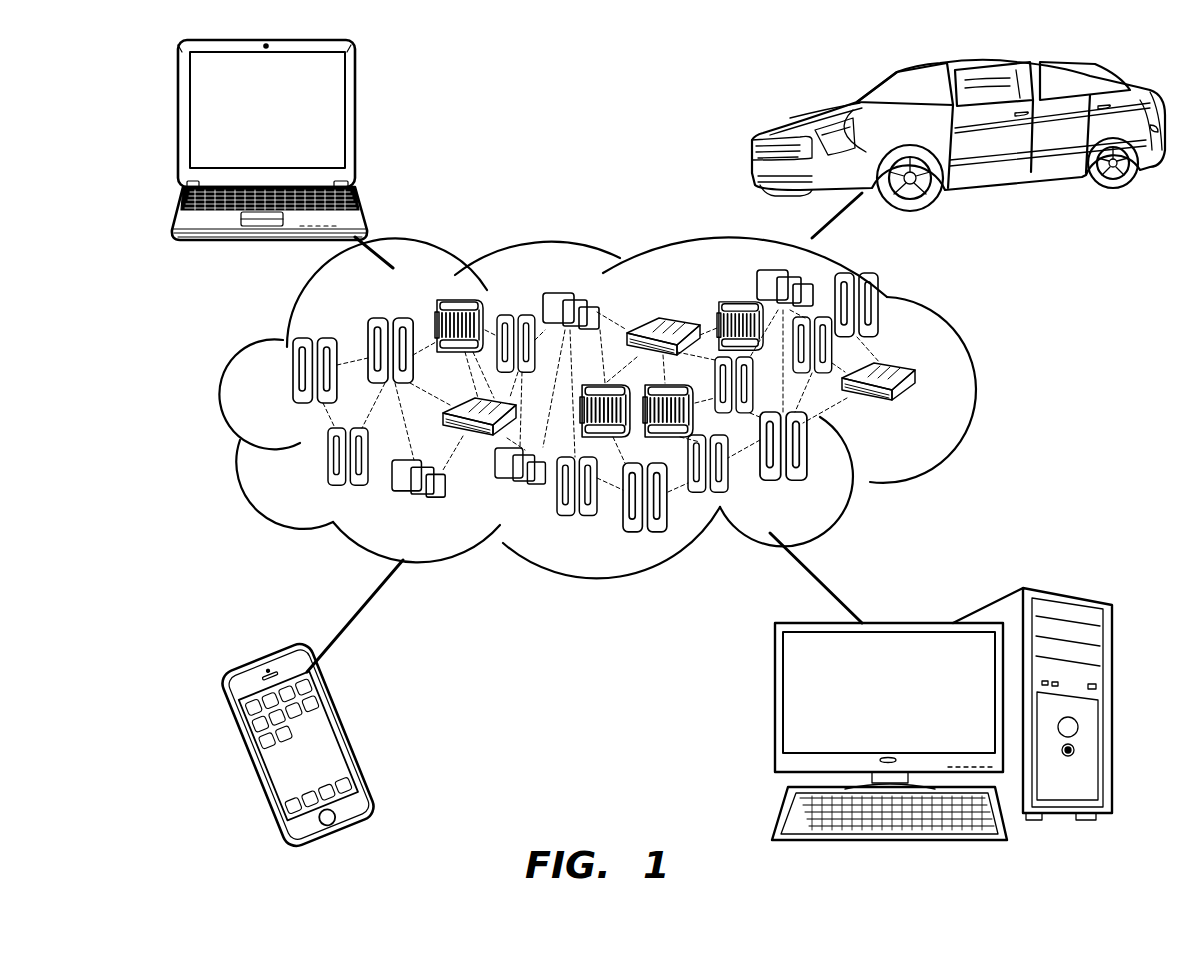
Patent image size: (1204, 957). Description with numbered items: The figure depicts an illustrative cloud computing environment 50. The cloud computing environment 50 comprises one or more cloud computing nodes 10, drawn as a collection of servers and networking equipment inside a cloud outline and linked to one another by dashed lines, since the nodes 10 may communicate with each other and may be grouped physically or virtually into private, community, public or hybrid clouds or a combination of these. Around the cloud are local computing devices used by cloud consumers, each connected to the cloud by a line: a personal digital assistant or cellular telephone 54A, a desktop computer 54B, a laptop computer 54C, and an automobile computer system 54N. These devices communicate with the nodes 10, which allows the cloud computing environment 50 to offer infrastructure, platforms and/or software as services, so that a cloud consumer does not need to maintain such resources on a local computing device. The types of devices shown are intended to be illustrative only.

The cloud computing node 10 is at (912, 395).
The cloud computing environment 50 is at (975, 383).
The personal digital assistant or cellular telephone 54A is at (325, 732).
The desktop computer 54B is at (990, 602).
The laptop computer 54C is at (332, 134).
The automobile computer system 54N is at (762, 141).